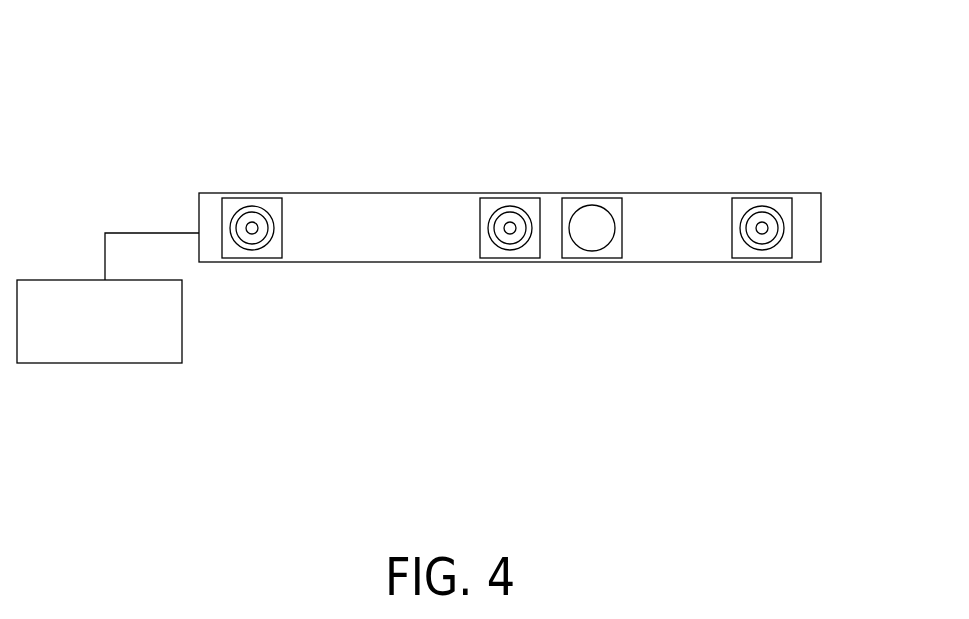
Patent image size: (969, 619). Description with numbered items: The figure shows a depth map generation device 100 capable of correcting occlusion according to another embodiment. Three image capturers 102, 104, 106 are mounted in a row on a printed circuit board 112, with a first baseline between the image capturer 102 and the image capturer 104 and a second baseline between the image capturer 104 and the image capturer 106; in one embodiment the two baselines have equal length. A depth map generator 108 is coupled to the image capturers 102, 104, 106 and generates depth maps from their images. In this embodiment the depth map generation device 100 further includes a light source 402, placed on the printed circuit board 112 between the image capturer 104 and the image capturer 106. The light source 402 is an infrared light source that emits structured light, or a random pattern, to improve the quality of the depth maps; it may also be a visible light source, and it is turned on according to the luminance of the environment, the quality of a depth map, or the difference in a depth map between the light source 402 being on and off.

The depth map generation device 100 is at (235, 82).
The image capturer 102 is at (233, 258).
The image capturer 104 is at (527, 258).
The image capturer 106 is at (785, 258).
The depth map generator 108 is at (107, 363).
The printed circuit board 112 is at (821, 231).
The light source 402 is at (603, 258).